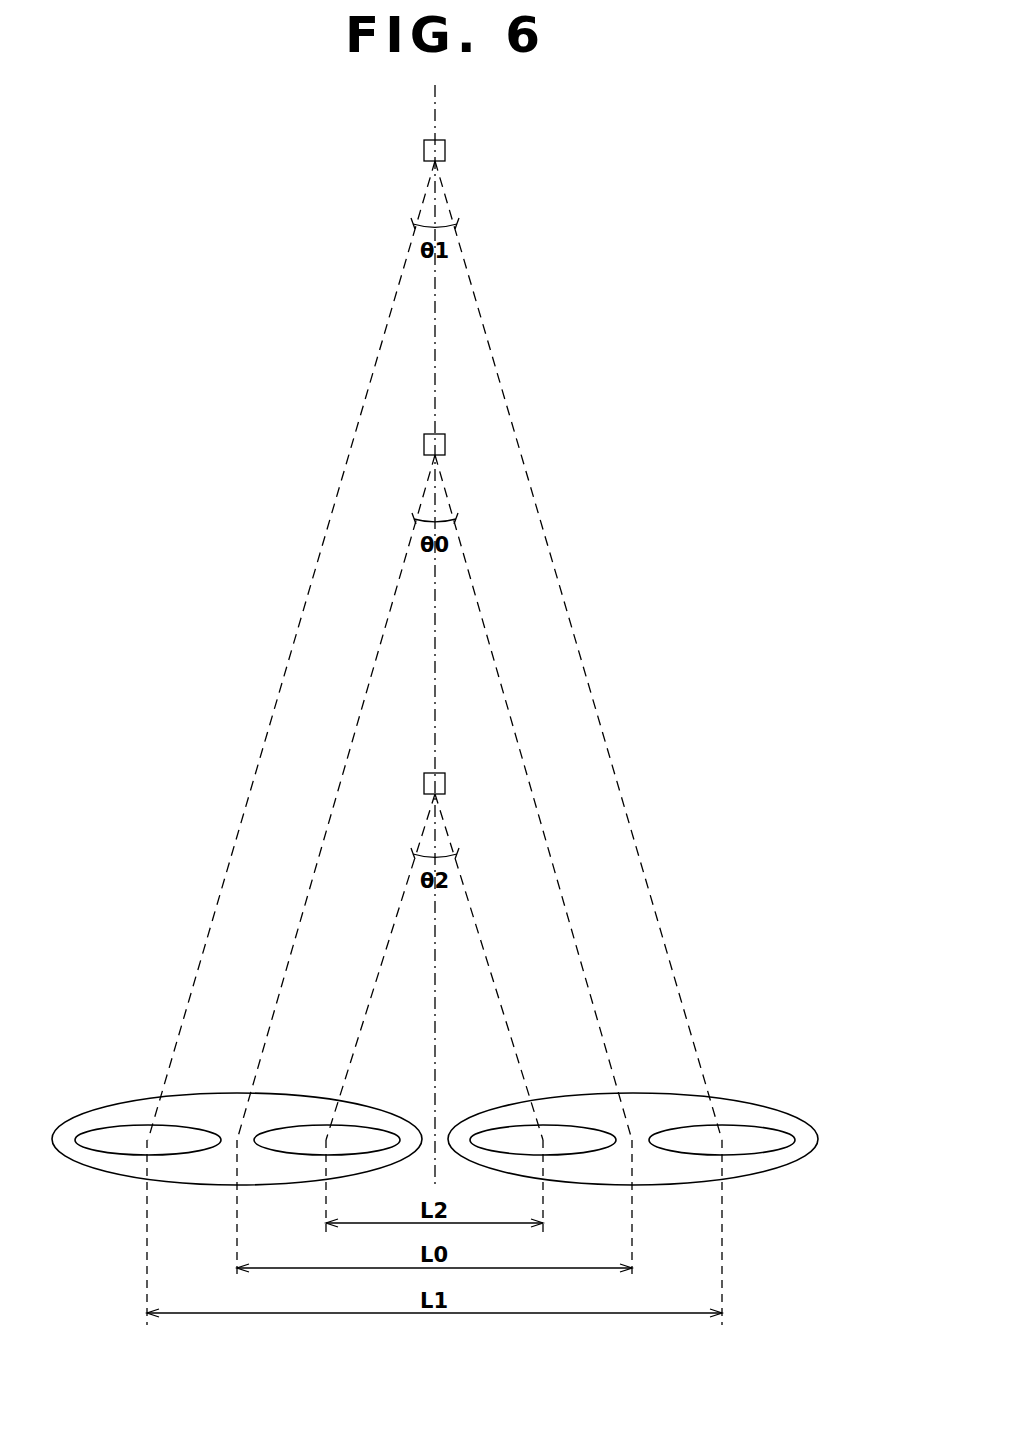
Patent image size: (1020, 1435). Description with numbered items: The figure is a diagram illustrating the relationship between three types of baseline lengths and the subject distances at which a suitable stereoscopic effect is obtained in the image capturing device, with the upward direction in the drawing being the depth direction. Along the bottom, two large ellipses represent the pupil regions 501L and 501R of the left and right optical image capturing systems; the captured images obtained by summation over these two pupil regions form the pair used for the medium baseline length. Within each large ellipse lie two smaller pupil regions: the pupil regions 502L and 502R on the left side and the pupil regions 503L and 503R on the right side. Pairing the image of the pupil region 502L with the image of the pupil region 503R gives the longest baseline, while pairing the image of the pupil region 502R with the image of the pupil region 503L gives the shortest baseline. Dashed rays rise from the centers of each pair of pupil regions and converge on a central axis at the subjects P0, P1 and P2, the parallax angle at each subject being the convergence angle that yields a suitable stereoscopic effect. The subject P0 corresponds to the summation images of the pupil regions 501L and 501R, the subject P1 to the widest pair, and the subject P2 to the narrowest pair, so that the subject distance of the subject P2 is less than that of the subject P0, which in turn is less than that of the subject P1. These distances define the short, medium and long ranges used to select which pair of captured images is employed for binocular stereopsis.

The pupil region 501L is at (277, 1185).
The pupil region 501R is at (677, 1185).
The pupil region 502L is at (95, 1128).
The pupil region 502R is at (358, 1128).
The pupil region 503L is at (495, 1128).
The pupil region 503R is at (758, 1128).
The subject P0 is at (453, 446).
The subject P1 is at (453, 152).
The subject P2 is at (453, 785).